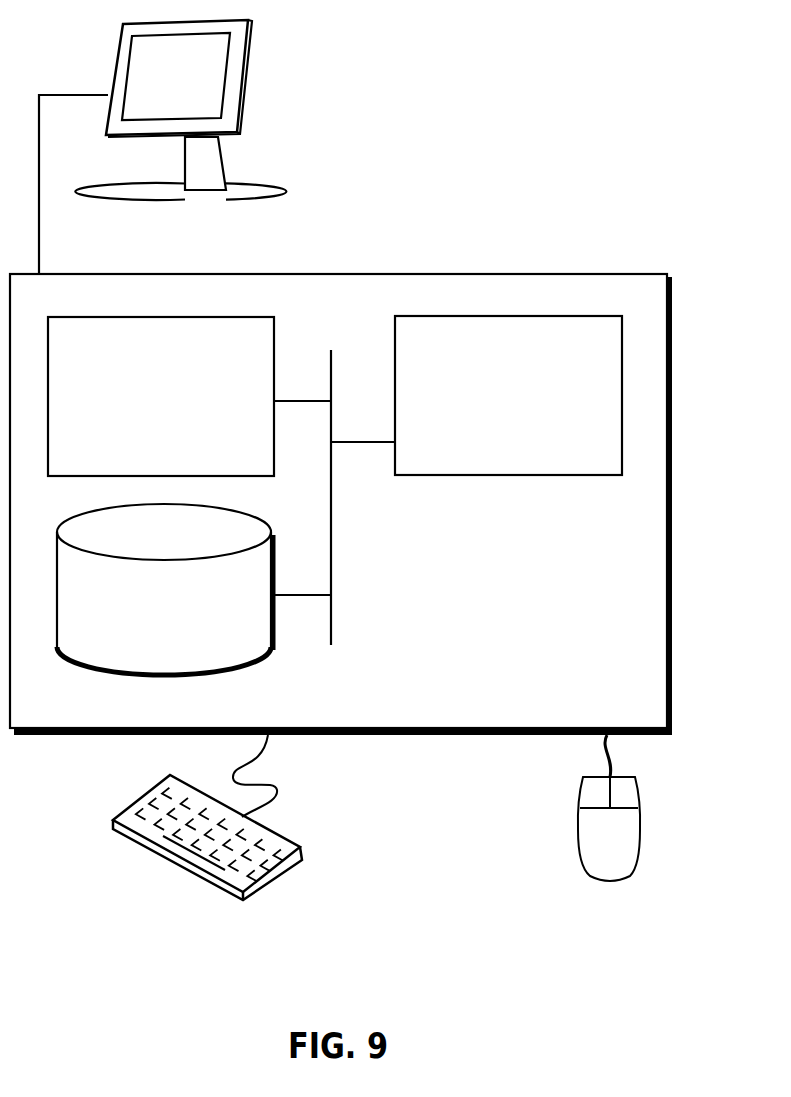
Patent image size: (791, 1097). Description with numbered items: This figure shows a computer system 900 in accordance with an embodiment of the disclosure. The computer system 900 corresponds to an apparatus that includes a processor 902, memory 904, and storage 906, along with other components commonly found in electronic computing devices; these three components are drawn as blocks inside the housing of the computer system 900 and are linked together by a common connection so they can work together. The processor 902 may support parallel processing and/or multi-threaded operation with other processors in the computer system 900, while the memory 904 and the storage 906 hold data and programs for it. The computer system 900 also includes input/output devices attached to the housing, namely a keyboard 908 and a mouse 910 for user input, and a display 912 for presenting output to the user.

The computer system 900 is at (385, 255).
The processor 902 is at (491, 408).
The memory 904 is at (142, 408).
The storage 906 is at (148, 618).
The keyboard 908 is at (133, 840).
The mouse 910 is at (590, 848).
The display 912 is at (162, 147).